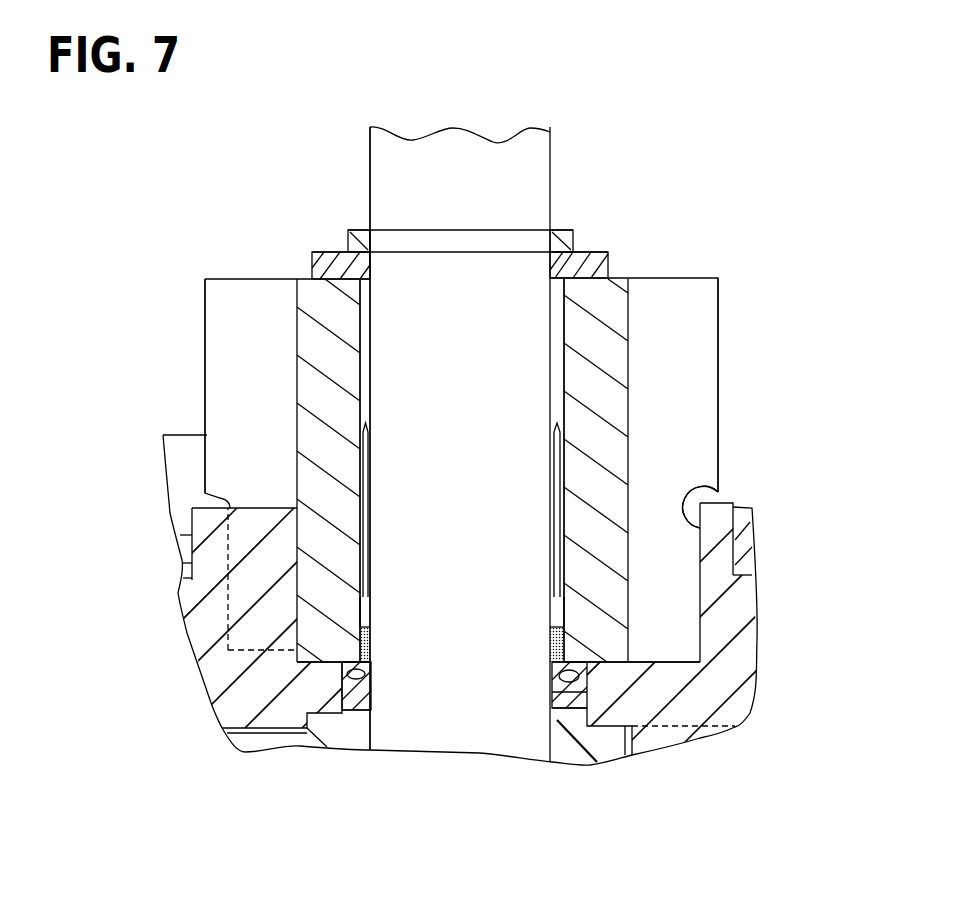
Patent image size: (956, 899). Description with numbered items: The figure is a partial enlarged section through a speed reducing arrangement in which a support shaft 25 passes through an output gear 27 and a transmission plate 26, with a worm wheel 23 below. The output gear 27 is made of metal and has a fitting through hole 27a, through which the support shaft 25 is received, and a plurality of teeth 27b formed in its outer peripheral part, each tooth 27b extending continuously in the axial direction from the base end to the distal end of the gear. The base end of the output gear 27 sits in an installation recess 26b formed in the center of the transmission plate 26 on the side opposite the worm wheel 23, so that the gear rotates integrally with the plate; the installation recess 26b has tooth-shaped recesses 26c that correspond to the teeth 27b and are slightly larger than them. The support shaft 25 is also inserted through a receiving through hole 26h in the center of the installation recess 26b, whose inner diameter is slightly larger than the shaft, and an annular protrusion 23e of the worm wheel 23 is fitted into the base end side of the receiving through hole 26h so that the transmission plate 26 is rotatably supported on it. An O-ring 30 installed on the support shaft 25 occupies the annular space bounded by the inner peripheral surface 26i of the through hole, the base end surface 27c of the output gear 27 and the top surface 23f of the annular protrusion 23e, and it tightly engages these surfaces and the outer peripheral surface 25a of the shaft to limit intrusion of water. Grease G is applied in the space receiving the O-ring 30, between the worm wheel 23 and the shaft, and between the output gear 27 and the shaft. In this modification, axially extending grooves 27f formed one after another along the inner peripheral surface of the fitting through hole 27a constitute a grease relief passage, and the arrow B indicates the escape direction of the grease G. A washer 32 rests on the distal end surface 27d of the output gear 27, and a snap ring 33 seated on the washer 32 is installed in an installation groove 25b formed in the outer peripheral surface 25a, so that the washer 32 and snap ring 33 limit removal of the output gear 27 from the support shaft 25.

The worm wheel 23 is at (571, 756).
The annular protrusion 23e is at (570, 718).
The top surface of the annular protrusion 23f is at (375, 707).
The support shaft 25 is at (537, 154).
The outer peripheral surface of the support shaft 25a is at (365, 393).
The installation groove 25b is at (450, 237).
The transmission plate 26 is at (746, 662).
The installation recess 26b is at (717, 488).
The tooth-shaped recess 26c is at (748, 498).
The receiving through hole 26h is at (572, 692).
The inner peripheral surface of the through hole 26i is at (373, 689).
The output gear 27 is at (702, 277).
The fitting through hole 27a is at (554, 372).
The teeth 27b is at (702, 332).
The base end surface of the output gear 27c is at (372, 665).
The distal end surface of the output gear 27d is at (307, 278).
The axially extending grooves 27f is at (368, 607).
The O-ring 30 is at (556, 668).
The washer 32 is at (603, 251).
The snap ring 33 is at (565, 229).
The arrow indicating escape direction of the grease B is at (370, 509).
The grease G is at (375, 637).